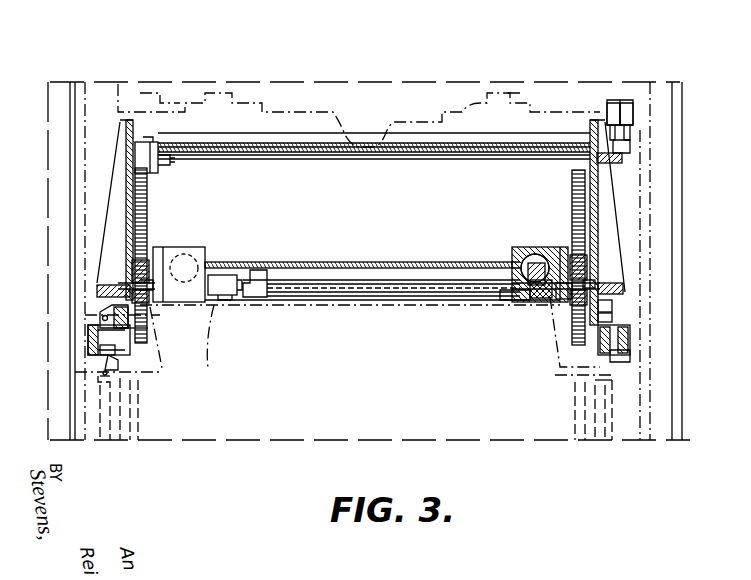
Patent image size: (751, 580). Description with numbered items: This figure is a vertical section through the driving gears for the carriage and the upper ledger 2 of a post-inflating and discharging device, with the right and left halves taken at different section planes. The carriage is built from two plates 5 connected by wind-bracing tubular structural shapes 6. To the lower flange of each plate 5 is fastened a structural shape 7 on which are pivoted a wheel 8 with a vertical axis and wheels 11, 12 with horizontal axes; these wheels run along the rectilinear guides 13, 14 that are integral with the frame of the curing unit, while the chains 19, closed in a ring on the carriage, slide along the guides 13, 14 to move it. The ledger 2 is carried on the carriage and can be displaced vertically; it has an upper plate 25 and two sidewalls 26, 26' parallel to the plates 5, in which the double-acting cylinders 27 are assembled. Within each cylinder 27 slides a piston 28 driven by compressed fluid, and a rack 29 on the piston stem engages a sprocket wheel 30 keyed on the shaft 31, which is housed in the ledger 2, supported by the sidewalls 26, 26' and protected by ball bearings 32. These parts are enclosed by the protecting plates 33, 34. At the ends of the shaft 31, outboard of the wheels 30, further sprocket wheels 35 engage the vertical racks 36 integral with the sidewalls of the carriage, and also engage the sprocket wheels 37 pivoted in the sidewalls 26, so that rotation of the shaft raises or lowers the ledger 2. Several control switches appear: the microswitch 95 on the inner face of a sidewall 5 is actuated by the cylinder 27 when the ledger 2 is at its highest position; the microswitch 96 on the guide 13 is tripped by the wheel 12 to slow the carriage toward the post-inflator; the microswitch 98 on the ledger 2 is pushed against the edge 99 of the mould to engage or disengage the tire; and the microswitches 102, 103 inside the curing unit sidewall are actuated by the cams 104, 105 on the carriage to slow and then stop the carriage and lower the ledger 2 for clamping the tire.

The ledger 2 is at (368, 300).
The plates 5 is at (115, 208).
The wind-bracing tubular structural shapes 6 is at (303, 136).
The structural shape 7 is at (100, 290).
The wheel 8 is at (147, 327).
The wheel 11 is at (612, 305).
The wheel 12 is at (113, 340).
The rectilinear guide 13 is at (115, 313).
The rectilinear guide 14 is at (630, 340).
The chains 19 is at (614, 318).
The upper plate 25 is at (414, 262).
The sidewall 26 is at (172, 249).
The sidewall 26' is at (499, 236).
The double-acting cylinder 27 is at (188, 258).
The piston 28 is at (536, 252).
The rack 29 is at (528, 268).
The sprocket wheel 30 is at (532, 297).
The shaft 31 is at (300, 290).
The ball bearings 32 is at (562, 300).
The protecting plate 33 is at (252, 280).
The protecting plate 34 is at (507, 300).
The sprocket wheel 35 is at (578, 280).
The vertical rack 36 is at (137, 184).
The sprocket wheel 37 is at (135, 281).
The microswitch 95 is at (157, 150).
The microswitch 96 is at (105, 375).
The microswitch 98 is at (228, 292).
The edge 99 is at (213, 306).
The microswitch 102 is at (627, 108).
The microswitch 103 is at (614, 103).
The cam 104 is at (632, 150).
The cam 105 is at (620, 155).